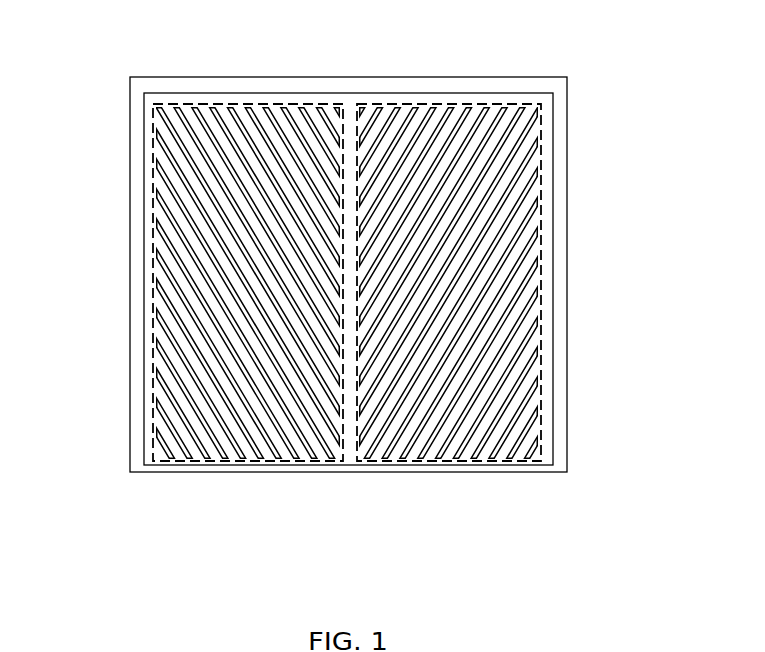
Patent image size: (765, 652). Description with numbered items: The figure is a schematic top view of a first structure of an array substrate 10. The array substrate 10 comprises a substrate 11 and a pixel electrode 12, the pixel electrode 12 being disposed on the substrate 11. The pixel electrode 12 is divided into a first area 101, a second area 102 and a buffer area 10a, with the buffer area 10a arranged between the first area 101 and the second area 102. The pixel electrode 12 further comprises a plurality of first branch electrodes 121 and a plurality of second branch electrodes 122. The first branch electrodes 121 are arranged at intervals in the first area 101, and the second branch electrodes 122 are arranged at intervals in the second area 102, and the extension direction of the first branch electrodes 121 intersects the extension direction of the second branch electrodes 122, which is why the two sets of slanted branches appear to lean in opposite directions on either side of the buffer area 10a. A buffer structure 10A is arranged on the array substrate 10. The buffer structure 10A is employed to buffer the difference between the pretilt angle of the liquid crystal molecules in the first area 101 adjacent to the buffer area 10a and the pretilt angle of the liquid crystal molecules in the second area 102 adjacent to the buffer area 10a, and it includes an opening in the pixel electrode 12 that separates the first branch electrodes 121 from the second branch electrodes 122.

The array substrate 10 is at (152, 54).
The buffer area 10a is at (352, 97).
The buffer structure 10A is at (352, 160).
The substrate 11 is at (558, 208).
The first area 101 is at (149, 287).
The second area 102 is at (549, 287).
The pixel electrode 12 is at (382, 300).
The first branch electrodes 121 is at (319, 455).
The second branch electrodes 122 is at (320, 503).